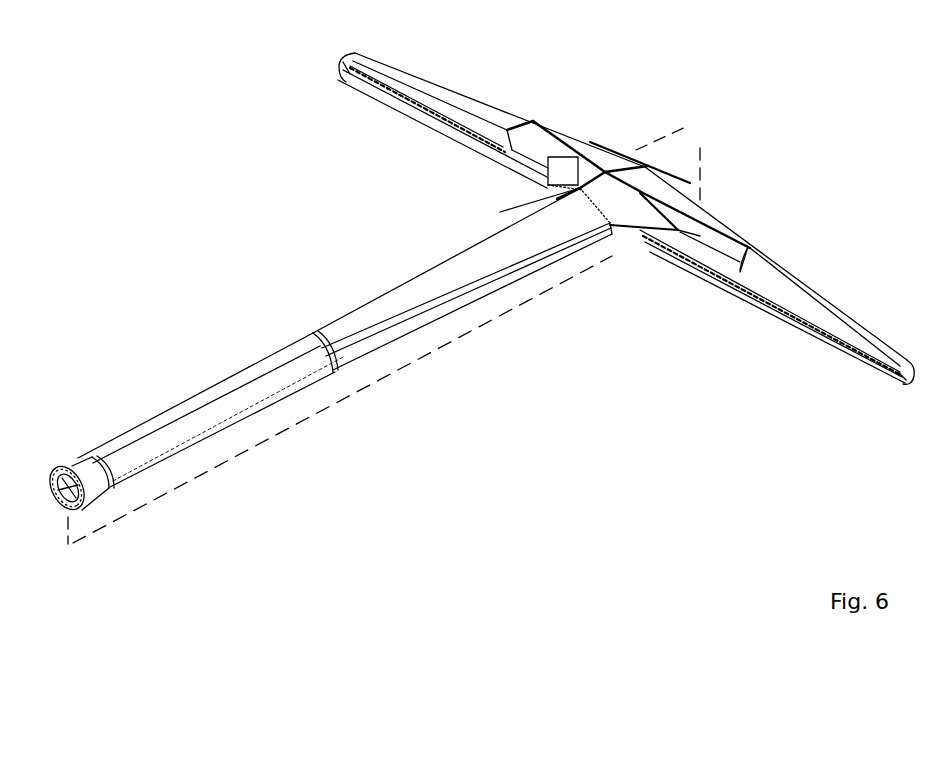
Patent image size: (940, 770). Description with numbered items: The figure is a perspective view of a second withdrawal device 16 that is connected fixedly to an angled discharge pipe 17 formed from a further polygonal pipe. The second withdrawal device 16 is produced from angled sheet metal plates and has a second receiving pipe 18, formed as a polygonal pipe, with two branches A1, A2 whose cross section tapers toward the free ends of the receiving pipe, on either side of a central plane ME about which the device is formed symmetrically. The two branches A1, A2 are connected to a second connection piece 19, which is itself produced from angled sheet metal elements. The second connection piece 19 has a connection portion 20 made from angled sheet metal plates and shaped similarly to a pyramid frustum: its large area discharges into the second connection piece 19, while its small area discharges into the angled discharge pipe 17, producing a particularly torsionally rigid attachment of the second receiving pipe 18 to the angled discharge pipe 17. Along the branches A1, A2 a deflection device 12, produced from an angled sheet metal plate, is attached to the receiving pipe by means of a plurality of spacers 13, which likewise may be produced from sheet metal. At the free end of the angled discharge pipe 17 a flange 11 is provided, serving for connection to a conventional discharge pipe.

The flange 11 is at (52, 466).
The deflection device 12 is at (422, 118).
The spacers 13 is at (342, 70).
The second withdrawal device 16 is at (783, 235).
The angled discharge pipe 17 is at (297, 308).
The second receiving pipe 18 is at (538, 107).
The second connection piece 19 is at (587, 150).
The connection portion 20 is at (618, 214).
The branch A1 is at (491, 119).
The branch A2 is at (777, 275).
The central plane ME is at (692, 136).